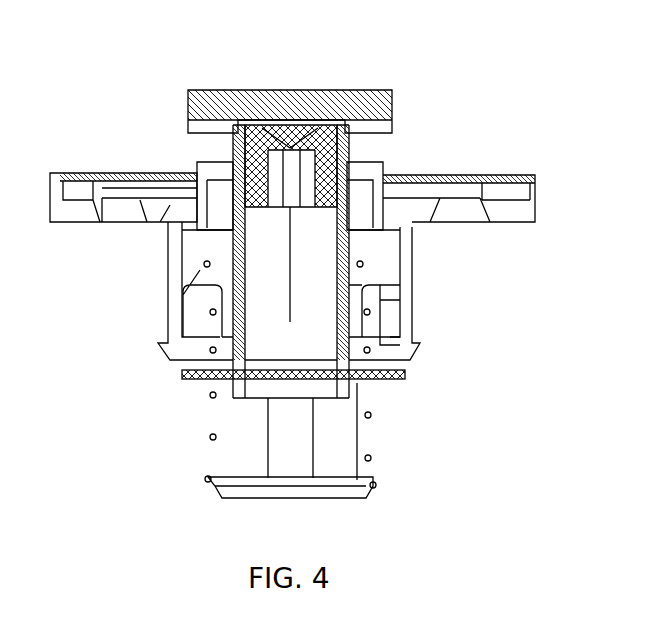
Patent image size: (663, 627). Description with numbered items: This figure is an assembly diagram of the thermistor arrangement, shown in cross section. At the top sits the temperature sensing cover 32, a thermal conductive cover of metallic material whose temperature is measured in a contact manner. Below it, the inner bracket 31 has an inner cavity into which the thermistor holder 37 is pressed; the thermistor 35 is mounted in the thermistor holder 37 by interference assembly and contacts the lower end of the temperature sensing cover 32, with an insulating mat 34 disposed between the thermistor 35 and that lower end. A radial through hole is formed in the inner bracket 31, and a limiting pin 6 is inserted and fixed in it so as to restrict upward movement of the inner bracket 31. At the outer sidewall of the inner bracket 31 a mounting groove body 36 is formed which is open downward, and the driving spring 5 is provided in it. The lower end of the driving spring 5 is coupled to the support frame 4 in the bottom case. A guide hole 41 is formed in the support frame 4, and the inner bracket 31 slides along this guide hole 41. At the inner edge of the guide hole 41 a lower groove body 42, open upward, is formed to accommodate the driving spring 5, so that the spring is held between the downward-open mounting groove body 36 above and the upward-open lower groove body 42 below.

The support frame 4 is at (170, 285).
The driving spring 5 is at (210, 312).
The limiting pin 6 is at (182, 372).
The inner bracket 31 is at (243, 197).
The temperature sensing cover 32 is at (337, 102).
The insulating mat 34 is at (288, 128).
The thermistor 35 is at (292, 132).
The mounting groove body 36 is at (380, 190).
The thermistor holder 37 is at (336, 162).
The guide hole 41 is at (390, 326).
The lower groove body 42 is at (362, 311).